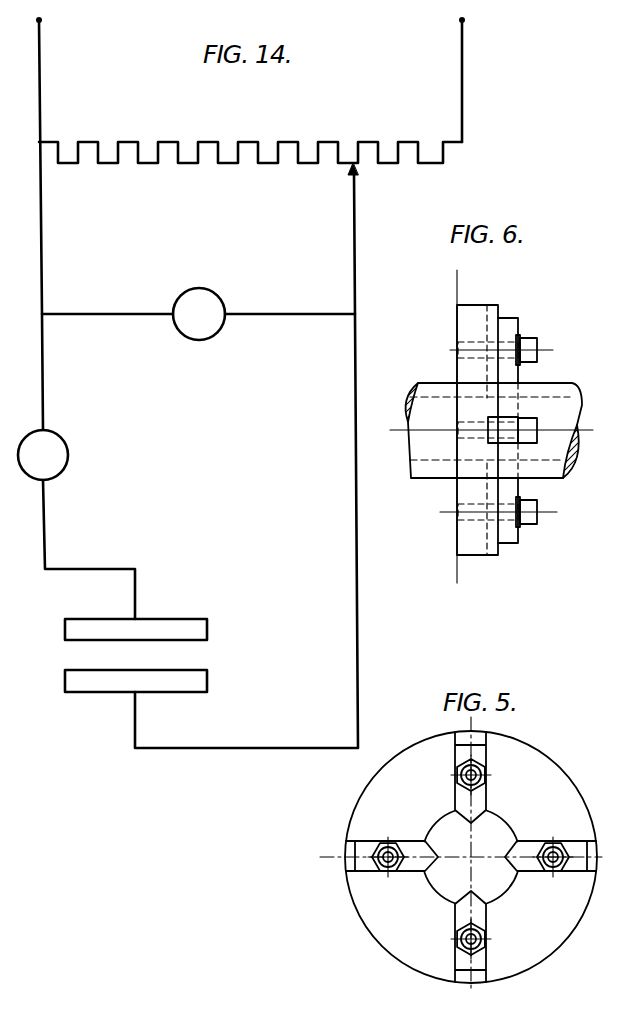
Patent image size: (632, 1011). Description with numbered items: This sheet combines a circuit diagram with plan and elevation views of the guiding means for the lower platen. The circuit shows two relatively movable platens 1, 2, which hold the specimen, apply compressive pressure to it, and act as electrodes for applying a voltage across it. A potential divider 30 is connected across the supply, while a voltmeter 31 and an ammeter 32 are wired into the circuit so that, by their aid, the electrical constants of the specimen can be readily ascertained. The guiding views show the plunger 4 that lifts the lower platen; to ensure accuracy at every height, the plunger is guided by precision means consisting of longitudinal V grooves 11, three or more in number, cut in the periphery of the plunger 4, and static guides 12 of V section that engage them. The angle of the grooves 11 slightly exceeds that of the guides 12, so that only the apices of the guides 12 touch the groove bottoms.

In FIG. 14, the platen 1 is at (80, 619).
In FIG. 14, the platen 2 is at (70, 692).
In FIG. 14, the potential divider 30 is at (90, 141).
In FIG. 14, the voltmeter 31 is at (199, 288).
In FIG. 14, the ammeter 32 is at (68, 452).
In FIG. 6, the plunger 4 is at (560, 404).
In FIG. 5, the plunger 4 is at (500, 880).
In FIG. 6, the longitudinal V grooves 11 is at (436, 395).
In FIG. 5, the longitudinal V grooves 11 is at (487, 815).
In FIG. 6, the static guides 12 is at (513, 322).
In FIG. 5, the static guides 12 is at (478, 807).